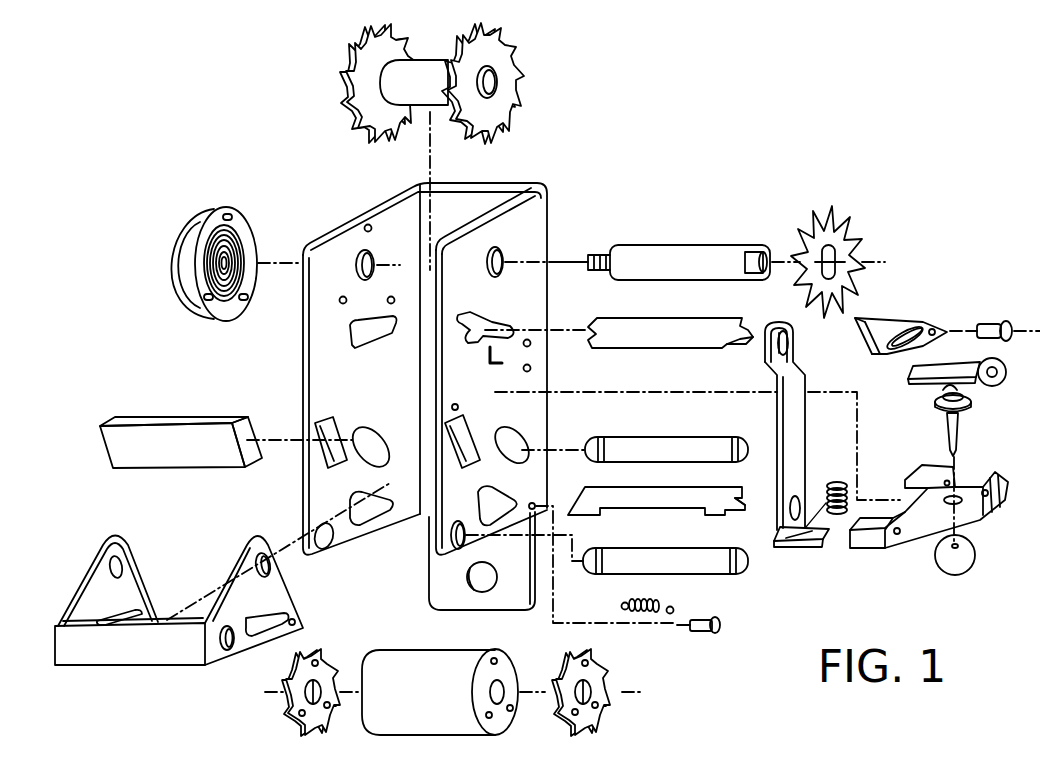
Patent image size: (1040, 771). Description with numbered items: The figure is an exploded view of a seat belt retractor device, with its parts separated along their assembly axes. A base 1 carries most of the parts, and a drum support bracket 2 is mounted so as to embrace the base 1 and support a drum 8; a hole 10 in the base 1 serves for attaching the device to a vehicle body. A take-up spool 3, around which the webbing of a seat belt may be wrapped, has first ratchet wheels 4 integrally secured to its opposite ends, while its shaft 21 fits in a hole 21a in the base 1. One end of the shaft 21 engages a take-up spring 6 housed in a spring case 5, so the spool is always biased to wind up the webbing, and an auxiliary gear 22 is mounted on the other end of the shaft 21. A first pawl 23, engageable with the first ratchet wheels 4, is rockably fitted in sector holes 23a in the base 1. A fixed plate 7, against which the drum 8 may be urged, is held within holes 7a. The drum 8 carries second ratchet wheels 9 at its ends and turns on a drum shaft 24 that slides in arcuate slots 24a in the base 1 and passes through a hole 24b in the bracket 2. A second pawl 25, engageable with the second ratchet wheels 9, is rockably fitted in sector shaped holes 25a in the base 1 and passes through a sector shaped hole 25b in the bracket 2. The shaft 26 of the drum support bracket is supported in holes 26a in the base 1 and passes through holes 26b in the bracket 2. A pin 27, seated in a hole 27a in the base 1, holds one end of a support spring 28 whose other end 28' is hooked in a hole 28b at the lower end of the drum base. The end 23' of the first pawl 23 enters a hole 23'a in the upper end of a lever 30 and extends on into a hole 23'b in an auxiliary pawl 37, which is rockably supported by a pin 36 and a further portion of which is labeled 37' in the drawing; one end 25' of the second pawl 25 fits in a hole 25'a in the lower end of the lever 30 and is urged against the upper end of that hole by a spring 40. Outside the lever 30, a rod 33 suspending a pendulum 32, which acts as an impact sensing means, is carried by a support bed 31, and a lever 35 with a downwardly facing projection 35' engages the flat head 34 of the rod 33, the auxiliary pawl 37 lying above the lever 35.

The base 1 is at (541, 203).
The drum support bracket 2 is at (95, 668).
The take-up spool 3 is at (420, 62).
The first ratchet wheels 4 is at (508, 58).
The spring case 5 is at (178, 246).
The take-up spring 6 is at (242, 250).
The fixed plate 7 is at (139, 468).
The holes 7a is at (463, 424).
The drum 8 is at (420, 654).
The second ratchet wheels 9 is at (606, 679).
The hole 10 is at (488, 573).
The shaft of the take-up spool 21 is at (668, 249).
The hole 21a is at (497, 250).
The auxiliary gear 22 is at (830, 216).
The first pawl 23 is at (670, 317).
The sector holes 23a is at (488, 318).
The end of the first pawl 23' is at (754, 316).
The hole 23'a is at (740, 359).
The hole 23'b is at (868, 372).
The drum shaft 24 is at (660, 441).
The arcuate slots 24a is at (522, 440).
The hole 24b is at (259, 554).
The second pawl 25 is at (656, 487).
The sector shaped holes 25a is at (486, 498).
The sector shaped hole 25b is at (262, 638).
The end of the second pawl 25' is at (724, 526).
The hole 25'a is at (785, 550).
The shaft of the drum support bracket 26 is at (641, 556).
The holes 26a is at (452, 538).
The holes 26b is at (223, 650).
The pin 27 is at (716, 634).
The hole 27a is at (537, 502).
The support spring 28 is at (666, 598).
The other end of the spring 28' is at (605, 600).
The hole 28b is at (296, 624).
The lever 30 is at (800, 419).
The support bed 31 is at (990, 521).
The pendulum 32 is at (968, 569).
The rod 33 is at (948, 437).
The flat head 34 is at (968, 403).
The lever 35 is at (957, 361).
The downwardly facing projection 35' is at (922, 401).
The pin 36 is at (988, 324).
The auxiliary pawl 37 is at (907, 321).
The plate edge 37' is at (881, 305).
The spring 40 is at (834, 482).